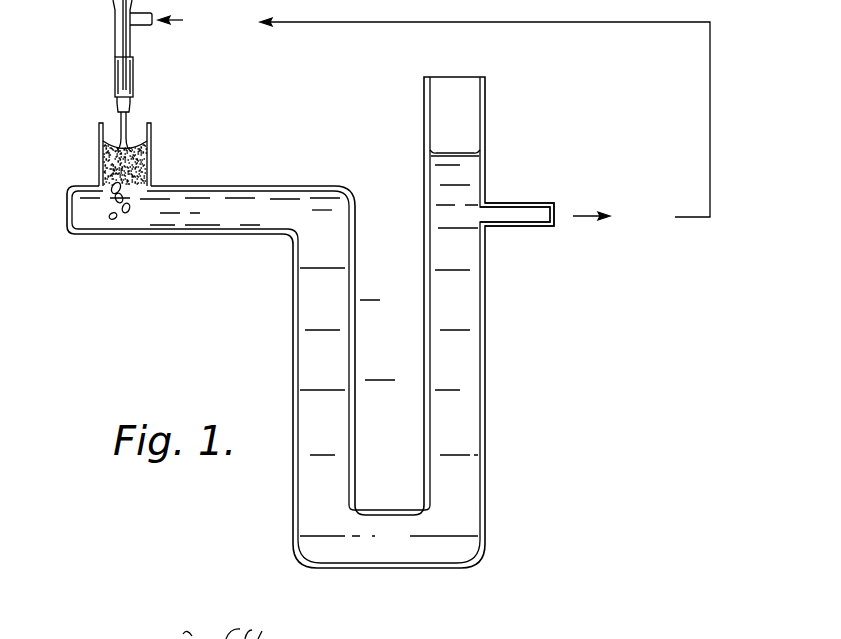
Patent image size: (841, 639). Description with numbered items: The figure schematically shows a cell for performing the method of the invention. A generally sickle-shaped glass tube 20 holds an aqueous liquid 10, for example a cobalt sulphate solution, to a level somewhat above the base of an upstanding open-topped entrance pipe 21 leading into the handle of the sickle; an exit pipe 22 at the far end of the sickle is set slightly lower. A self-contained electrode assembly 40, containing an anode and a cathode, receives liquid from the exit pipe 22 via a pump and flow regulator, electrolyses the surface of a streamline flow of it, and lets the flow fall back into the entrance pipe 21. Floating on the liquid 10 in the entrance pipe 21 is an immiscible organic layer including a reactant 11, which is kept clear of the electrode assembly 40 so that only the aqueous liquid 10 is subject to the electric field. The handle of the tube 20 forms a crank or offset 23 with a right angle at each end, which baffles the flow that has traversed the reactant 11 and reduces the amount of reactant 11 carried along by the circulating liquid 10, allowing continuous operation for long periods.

The liquid 10 is at (337, 357).
The reactant 11 is at (151, 160).
The glass tube 20 is at (498, 453).
The entrance pipe 21 is at (151, 130).
The exit pipe 22 is at (530, 228).
The crank or offset 23 is at (204, 237).
The electrode assembly 40 is at (108, 37).